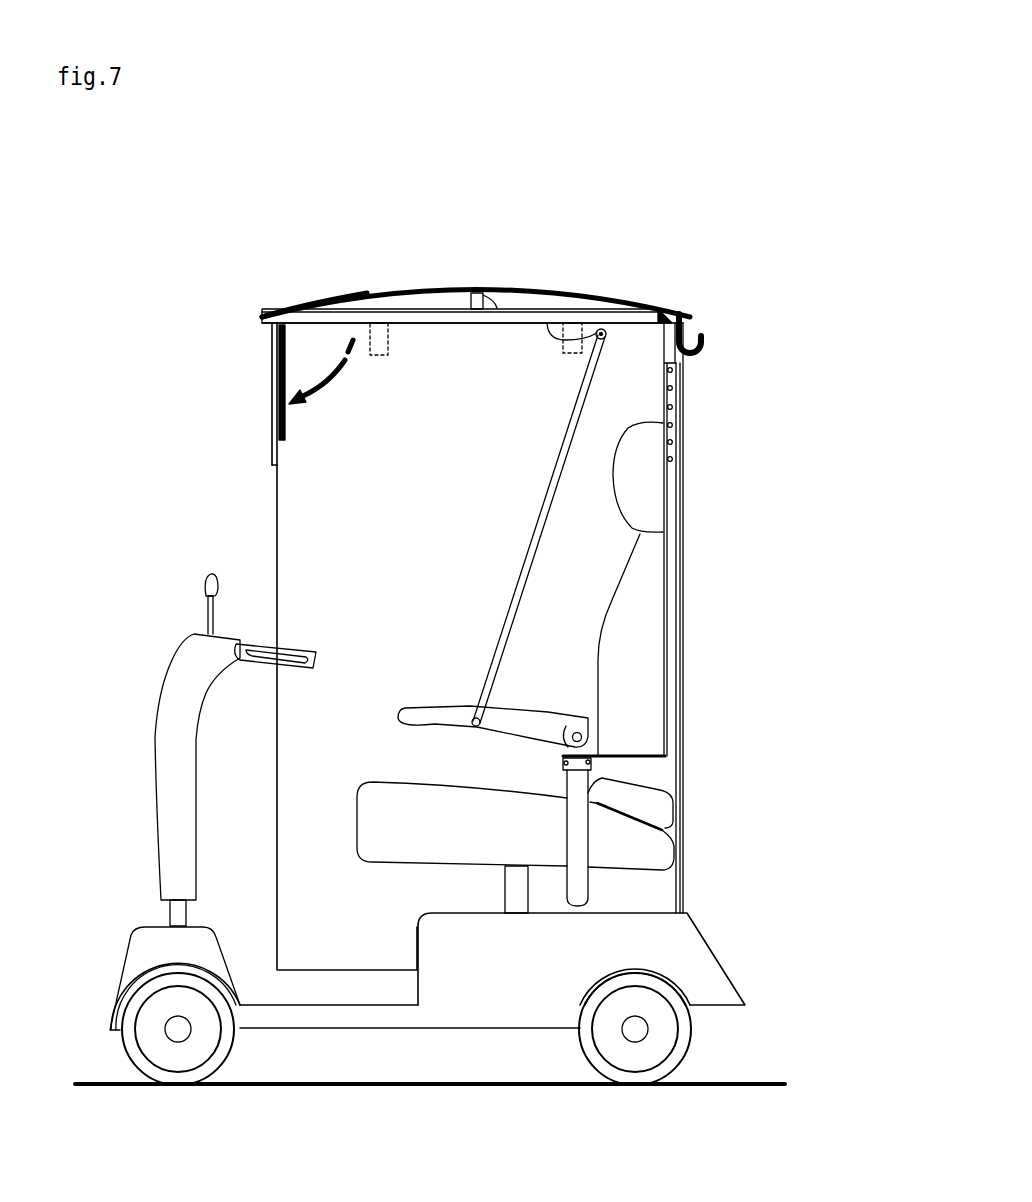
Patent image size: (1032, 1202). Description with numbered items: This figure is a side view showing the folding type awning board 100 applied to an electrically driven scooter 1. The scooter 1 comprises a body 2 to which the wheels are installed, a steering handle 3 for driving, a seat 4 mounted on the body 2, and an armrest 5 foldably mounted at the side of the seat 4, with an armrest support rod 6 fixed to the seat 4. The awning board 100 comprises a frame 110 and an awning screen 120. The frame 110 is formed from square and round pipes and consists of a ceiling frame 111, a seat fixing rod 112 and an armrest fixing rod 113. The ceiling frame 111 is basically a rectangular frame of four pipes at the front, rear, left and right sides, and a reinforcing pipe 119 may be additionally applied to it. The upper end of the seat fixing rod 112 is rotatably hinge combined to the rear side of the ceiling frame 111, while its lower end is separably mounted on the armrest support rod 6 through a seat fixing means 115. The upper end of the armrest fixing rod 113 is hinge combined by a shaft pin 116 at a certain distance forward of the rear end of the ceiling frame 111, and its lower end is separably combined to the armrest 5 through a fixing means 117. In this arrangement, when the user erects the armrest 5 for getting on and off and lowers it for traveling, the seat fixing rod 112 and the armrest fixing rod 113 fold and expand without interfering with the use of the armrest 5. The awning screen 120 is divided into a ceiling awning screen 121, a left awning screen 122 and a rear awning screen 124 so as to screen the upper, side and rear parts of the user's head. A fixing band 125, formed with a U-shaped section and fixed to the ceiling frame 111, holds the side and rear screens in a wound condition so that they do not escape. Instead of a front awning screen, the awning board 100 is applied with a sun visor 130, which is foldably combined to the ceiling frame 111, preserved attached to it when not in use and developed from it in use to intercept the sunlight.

The electrically driven scooter 1 is at (160, 684).
The body 2 is at (350, 1013).
The steering handle 3 is at (176, 736).
The seat 4 is at (642, 495).
The armrest 5 is at (533, 712).
The armrest support rod 6 is at (582, 736).
The folding type awning board 100 is at (735, 212).
The frame 110 is at (665, 318).
The ceiling frame 111 is at (427, 310).
The seat fixing rod 112 is at (668, 585).
The armrest fixing rod 113 is at (528, 588).
The seat fixing means 115 is at (585, 767).
The shaft pin 116 is at (547, 309).
The fixing means 117 is at (465, 718).
The reinforcing pipe 119 is at (497, 300).
The awning screen 120 is at (598, 297).
The ceiling awning screen 121 is at (366, 292).
The left awning screen 122 is at (313, 508).
The rear awning screen 124 is at (684, 427).
The fixing band 125 is at (598, 336).
The sun visor 130 is at (283, 365).